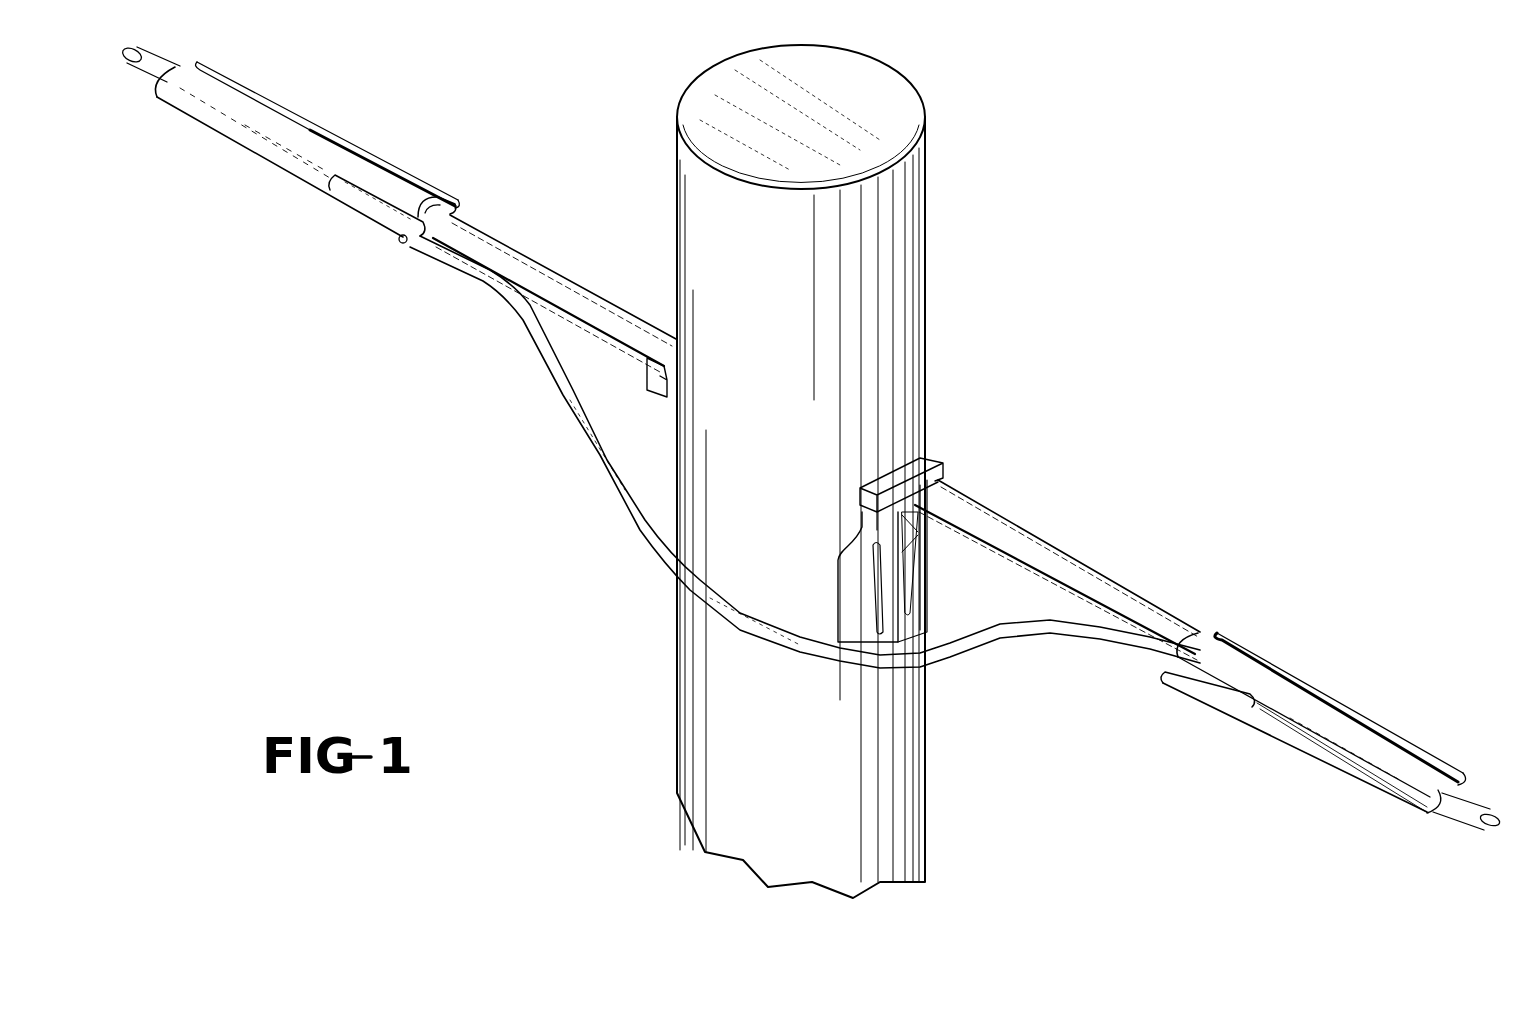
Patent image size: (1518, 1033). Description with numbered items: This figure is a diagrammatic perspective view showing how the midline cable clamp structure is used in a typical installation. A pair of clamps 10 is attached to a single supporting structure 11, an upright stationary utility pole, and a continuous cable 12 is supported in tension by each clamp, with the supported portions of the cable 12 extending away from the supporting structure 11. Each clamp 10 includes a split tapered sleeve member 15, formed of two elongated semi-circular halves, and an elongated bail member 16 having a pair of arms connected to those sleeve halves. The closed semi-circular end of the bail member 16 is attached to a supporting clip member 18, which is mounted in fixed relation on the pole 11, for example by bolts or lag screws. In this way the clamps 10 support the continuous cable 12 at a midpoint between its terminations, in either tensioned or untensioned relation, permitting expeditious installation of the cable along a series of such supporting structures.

The cable clamp 10 is at (343, 133).
The supporting structure 11 is at (910, 207).
The continuous cable 12 is at (1008, 632).
The split tapered sleeve member 15 is at (403, 178).
The elongated bail member 16 is at (517, 250).
The supporting clip member 18 is at (850, 592).